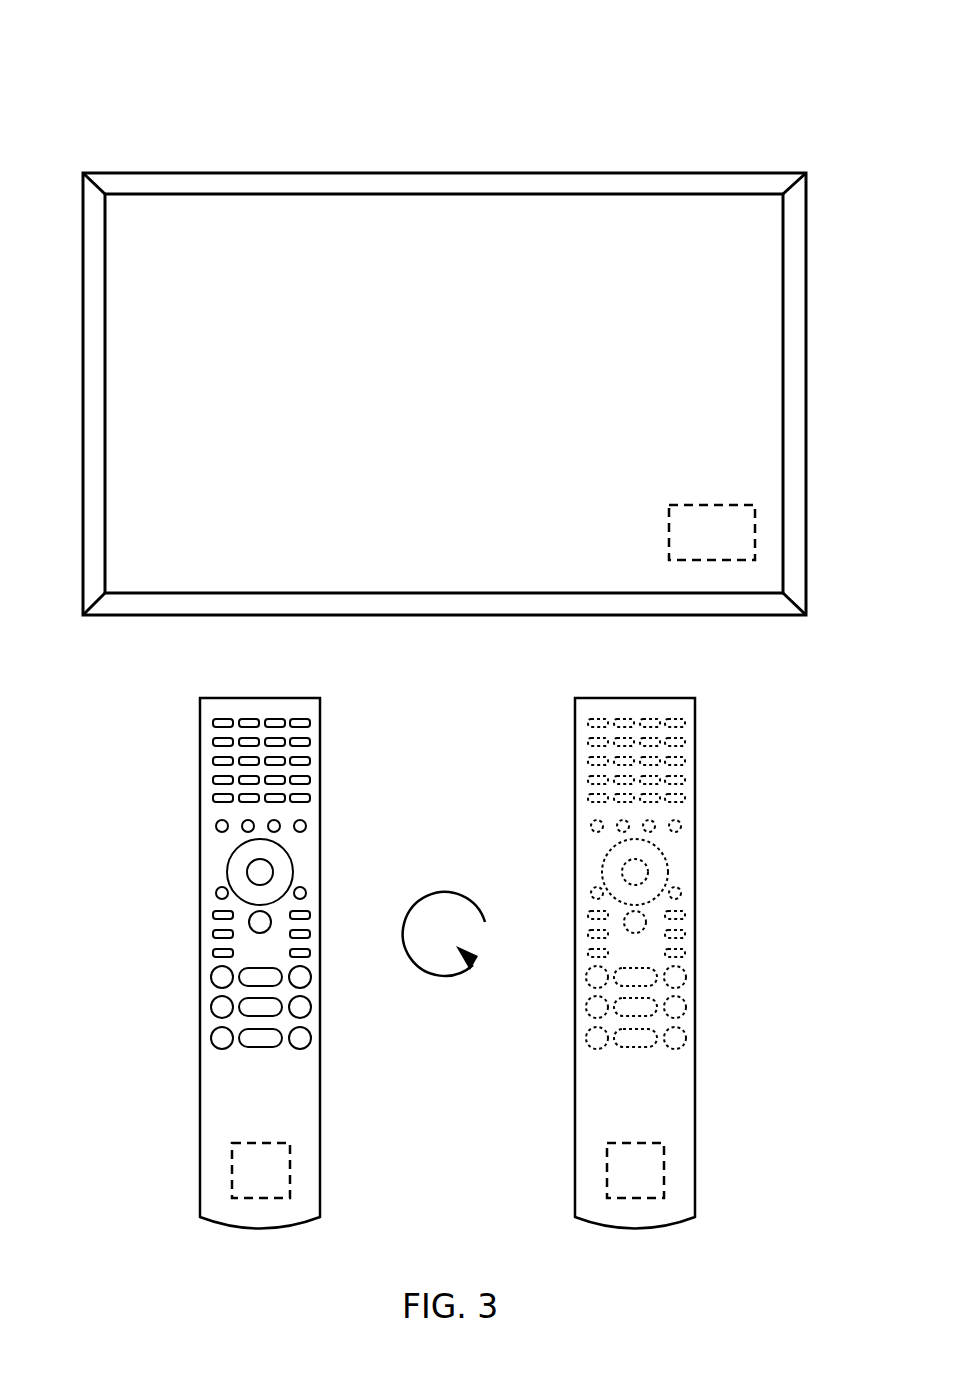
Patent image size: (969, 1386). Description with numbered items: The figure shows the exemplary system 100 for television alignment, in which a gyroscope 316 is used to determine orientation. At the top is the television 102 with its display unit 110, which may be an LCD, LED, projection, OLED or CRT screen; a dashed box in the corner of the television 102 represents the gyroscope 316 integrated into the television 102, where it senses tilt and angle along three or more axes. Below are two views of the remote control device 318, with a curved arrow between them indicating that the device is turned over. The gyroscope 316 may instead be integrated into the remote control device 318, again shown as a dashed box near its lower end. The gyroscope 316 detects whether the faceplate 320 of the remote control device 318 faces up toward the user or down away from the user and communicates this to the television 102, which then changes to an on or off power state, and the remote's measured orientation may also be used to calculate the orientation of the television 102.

The system for television alignment 100 is at (88, 86).
The television 102 is at (807, 230).
The display unit 110 is at (766, 370).
The gyroscope 316 is at (755, 547).
The remote control device 318 is at (200, 1140).
The faceplate 320 is at (213, 882).